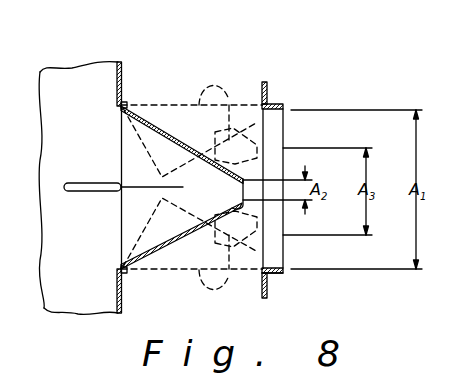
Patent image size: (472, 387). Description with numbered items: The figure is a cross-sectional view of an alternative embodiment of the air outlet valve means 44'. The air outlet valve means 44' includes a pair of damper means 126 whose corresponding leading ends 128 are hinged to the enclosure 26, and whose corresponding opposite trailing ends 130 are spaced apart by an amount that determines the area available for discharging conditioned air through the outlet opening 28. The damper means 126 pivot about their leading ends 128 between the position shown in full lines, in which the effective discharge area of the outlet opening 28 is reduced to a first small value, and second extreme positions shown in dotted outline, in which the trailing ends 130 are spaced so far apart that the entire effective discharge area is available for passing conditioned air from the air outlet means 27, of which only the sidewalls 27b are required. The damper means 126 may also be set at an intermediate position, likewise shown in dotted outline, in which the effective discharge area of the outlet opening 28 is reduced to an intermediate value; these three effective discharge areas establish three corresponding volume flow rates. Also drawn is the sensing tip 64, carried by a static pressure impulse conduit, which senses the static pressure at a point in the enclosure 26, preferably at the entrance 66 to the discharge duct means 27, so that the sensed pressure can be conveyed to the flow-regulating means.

The enclosure 26 is at (72, 68).
The leading ends 128 is at (117, 106).
The sensing tip 64 is at (90, 183).
The entrance 66 is at (120, 223).
The damper means 126 is at (160, 128).
The trailing ends 130 is at (242, 195).
The air outlet means 27 is at (238, 86).
The sidewalls 27b is at (258, 134).
The outlet opening 28 is at (278, 260).
The air outlet valve means 44' is at (306, 171).